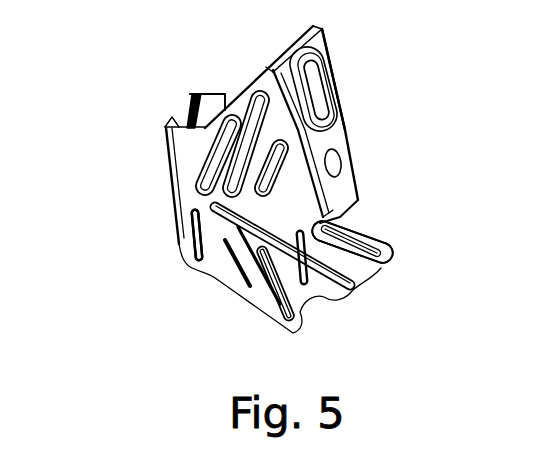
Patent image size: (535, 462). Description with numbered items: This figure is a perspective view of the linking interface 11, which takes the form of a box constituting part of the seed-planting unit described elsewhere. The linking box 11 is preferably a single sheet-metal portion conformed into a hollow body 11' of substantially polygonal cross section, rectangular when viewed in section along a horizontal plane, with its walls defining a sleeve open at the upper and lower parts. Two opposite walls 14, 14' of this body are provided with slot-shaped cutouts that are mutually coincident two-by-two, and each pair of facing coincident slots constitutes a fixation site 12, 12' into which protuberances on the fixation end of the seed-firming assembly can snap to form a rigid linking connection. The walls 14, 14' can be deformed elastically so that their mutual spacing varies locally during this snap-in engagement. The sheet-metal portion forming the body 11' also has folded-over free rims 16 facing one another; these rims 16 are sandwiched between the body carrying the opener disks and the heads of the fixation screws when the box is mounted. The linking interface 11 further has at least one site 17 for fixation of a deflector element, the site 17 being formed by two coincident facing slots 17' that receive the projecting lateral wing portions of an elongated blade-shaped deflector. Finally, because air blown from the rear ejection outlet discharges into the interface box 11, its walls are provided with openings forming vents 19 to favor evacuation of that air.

The linking interface 11 is at (249, 196).
The hollow body 11' is at (357, 123).
The fixation site 12 is at (120, 256).
The fixation site 12' is at (400, 227).
The wall 14 is at (180, 153).
The wall 14' is at (193, 60).
The folded-over free rims 16 is at (170, 118).
The fixation site 17 is at (214, 311).
The slots 17' is at (236, 304).
The vents 19 is at (237, 128).